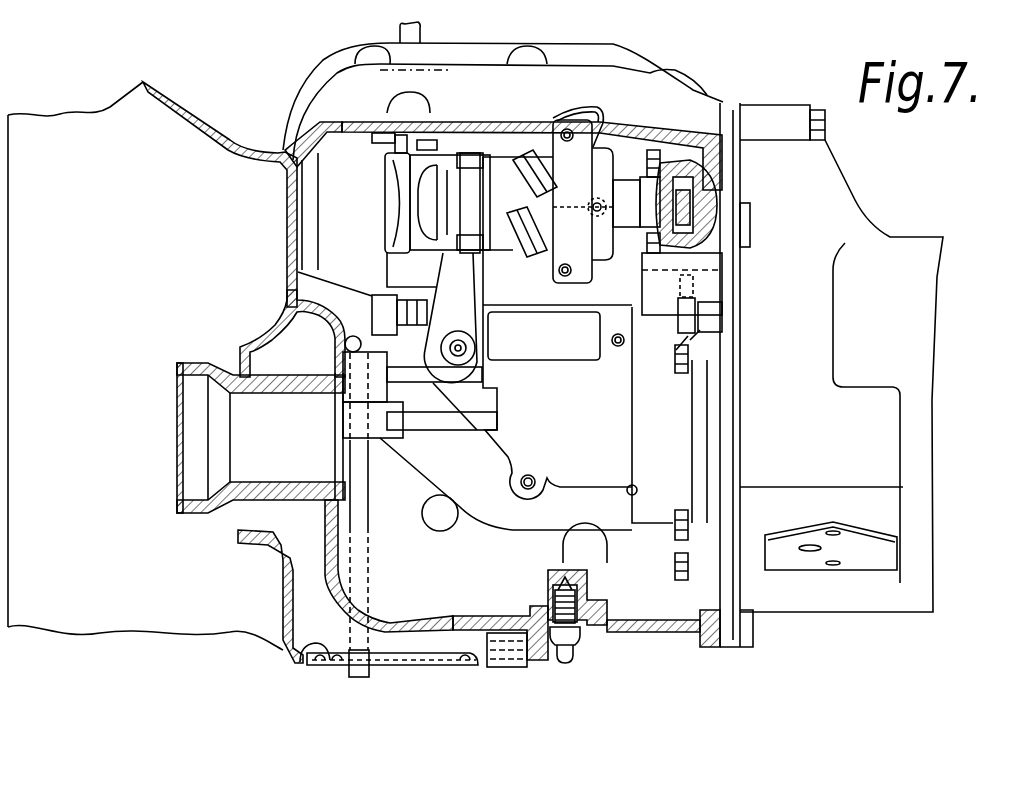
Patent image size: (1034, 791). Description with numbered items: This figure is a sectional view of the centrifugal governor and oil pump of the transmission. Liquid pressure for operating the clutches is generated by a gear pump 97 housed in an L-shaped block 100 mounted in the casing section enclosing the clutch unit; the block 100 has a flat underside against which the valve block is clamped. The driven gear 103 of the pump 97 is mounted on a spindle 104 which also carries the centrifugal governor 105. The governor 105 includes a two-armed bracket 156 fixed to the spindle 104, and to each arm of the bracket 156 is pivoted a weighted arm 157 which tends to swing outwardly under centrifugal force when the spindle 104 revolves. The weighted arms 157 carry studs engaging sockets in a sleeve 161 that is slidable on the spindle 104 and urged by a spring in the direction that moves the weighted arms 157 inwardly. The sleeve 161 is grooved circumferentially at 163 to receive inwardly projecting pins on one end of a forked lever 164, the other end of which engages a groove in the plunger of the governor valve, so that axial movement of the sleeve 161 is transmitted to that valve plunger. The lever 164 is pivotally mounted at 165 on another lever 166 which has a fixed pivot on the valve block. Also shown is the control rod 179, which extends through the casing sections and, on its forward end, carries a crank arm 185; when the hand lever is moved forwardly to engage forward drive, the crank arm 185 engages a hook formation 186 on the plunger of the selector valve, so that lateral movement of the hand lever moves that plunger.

The gear pump 97 is at (727, 217).
The L-shaped block 100 is at (668, 433).
The driven gear 103 is at (688, 217).
The spindle 104 is at (660, 200).
The centrifugal governor 105 is at (577, 123).
The two-armed bracket 156 is at (583, 170).
The weighted arm 157 is at (537, 233).
The sleeve 161 is at (580, 117).
The circumferential groove 163 is at (500, 193).
The forked lever 164 is at (453, 167).
The pivot 165 is at (427, 147).
The lever 166 is at (393, 213).
The control rod 179 is at (700, 318).
The crank arm 185 is at (687, 313).
The hook formation 186 is at (708, 282).